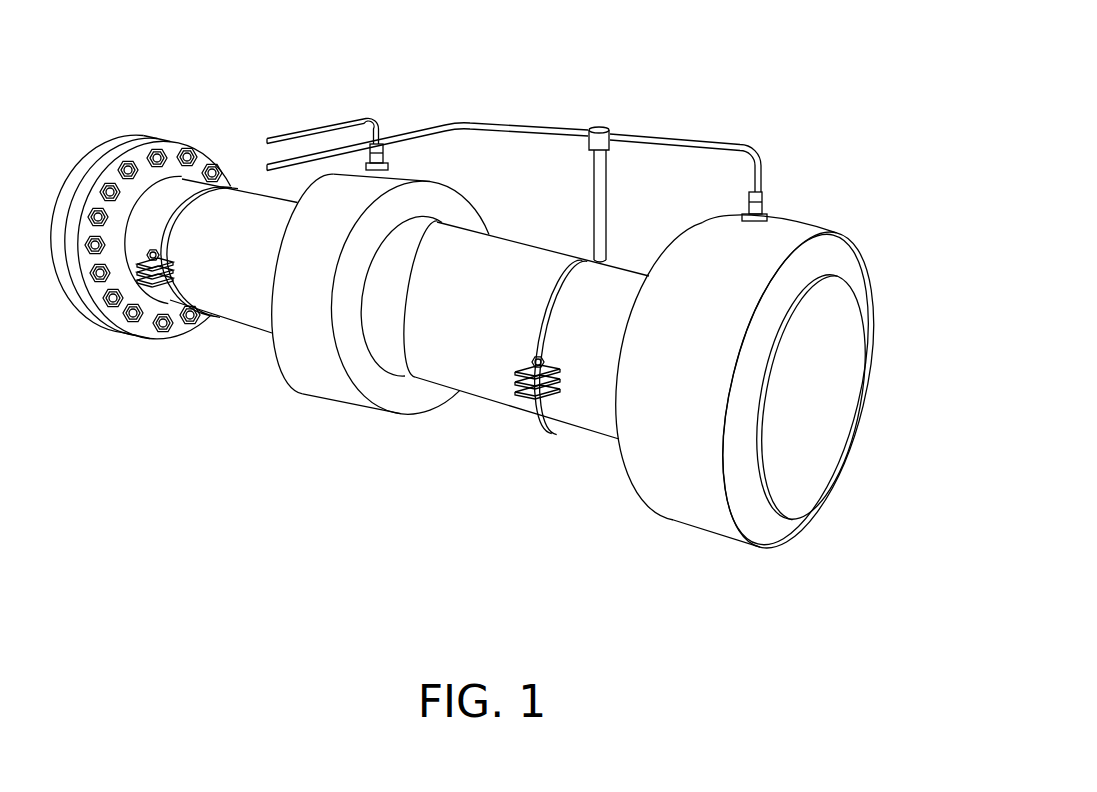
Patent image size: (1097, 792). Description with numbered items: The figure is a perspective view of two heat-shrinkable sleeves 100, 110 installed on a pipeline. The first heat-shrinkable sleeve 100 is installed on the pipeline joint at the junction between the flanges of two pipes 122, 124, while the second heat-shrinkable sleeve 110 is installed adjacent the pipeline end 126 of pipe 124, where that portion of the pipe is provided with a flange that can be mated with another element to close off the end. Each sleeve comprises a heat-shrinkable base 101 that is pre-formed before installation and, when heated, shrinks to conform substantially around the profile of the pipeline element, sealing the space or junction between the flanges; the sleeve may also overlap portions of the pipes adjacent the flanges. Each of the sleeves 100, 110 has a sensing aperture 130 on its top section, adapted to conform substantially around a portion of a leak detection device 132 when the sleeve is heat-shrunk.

The heat-shrinkable sleeve 100 is at (387, 342).
The heat-shrinkable base 101 is at (332, 200).
The heat-shrinkable sleeve 110 is at (743, 487).
The pipe 122 is at (245, 293).
The pipe 124 is at (603, 380).
The pipeline end 126 is at (830, 377).
The sensing aperture 130 is at (388, 165).
The leak detection device 132 is at (386, 166).